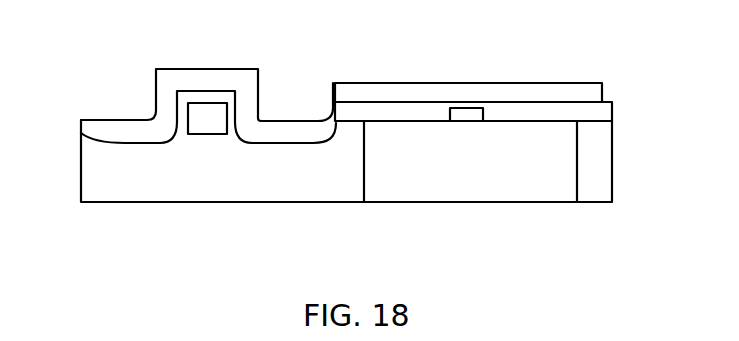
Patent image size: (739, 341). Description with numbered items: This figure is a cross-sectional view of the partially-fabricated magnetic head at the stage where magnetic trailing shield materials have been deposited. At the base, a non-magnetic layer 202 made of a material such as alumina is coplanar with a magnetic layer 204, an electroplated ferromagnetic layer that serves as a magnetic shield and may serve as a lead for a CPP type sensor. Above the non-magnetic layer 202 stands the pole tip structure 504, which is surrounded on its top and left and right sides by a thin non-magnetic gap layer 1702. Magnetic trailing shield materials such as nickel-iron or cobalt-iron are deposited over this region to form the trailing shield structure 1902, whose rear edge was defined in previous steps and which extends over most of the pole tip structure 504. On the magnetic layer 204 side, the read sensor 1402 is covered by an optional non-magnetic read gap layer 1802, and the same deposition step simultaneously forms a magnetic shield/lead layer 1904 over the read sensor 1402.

The non-magnetic layer 202 is at (220, 203).
The magnetic layer 204 is at (480, 203).
The pole tip structure 504 is at (200, 103).
The non-magnetic gap layer 1702 is at (215, 97).
The trailing shield structure 1902 is at (145, 130).
The non-magnetic read gap layer 1802 is at (505, 112).
The magnetic shield/lead layer 1904 is at (603, 92).
The read sensor 1402 is at (470, 115).